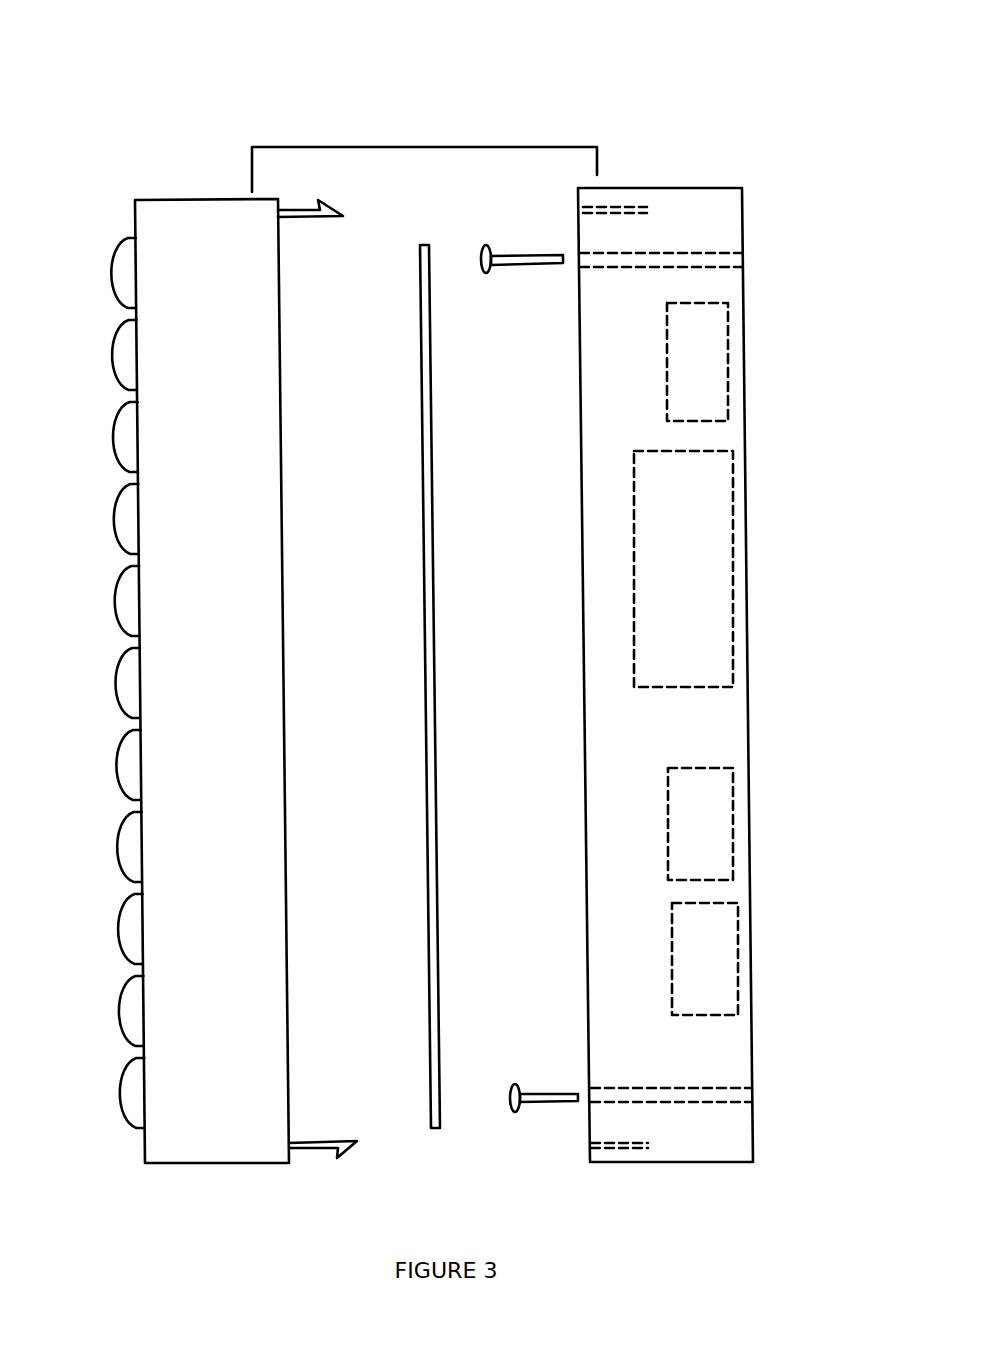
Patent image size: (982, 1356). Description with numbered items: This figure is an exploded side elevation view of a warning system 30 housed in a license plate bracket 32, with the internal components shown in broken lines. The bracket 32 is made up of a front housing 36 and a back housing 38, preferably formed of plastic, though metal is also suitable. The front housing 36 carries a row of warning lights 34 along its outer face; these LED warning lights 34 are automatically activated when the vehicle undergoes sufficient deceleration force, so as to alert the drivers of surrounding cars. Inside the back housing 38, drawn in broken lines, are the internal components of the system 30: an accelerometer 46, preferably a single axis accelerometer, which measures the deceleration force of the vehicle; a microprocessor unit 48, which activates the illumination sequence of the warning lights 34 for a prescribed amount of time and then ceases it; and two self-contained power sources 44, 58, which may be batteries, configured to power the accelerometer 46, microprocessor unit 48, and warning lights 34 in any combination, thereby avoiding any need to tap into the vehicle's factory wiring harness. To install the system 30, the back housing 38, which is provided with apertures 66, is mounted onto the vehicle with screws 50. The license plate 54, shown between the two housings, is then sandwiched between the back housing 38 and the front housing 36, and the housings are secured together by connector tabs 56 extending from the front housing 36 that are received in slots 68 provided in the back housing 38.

The warning system 30 is at (206, 99).
The license plate bracket 32 is at (418, 147).
The warning lights 34 is at (123, 597).
The front housing 36 is at (177, 222).
The back housing 38 is at (710, 728).
The power source 44 is at (698, 813).
The accelerometer 46 is at (673, 557).
The microprocessor unit 48 is at (698, 353).
The screws 50 is at (513, 262).
The license plate 54 is at (436, 588).
The connector tabs 56 is at (332, 1142).
The power source 58 is at (702, 942).
The apertures 66 is at (683, 253).
The slots 68 is at (636, 201).